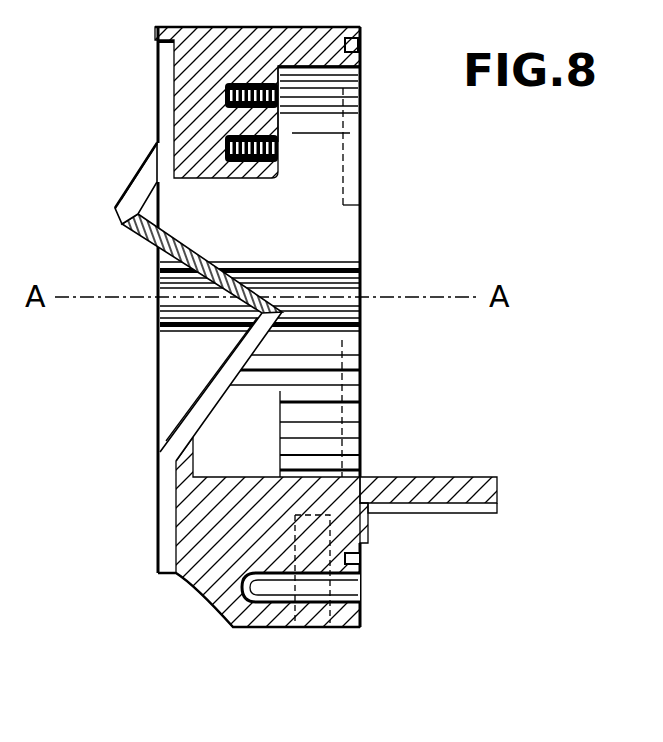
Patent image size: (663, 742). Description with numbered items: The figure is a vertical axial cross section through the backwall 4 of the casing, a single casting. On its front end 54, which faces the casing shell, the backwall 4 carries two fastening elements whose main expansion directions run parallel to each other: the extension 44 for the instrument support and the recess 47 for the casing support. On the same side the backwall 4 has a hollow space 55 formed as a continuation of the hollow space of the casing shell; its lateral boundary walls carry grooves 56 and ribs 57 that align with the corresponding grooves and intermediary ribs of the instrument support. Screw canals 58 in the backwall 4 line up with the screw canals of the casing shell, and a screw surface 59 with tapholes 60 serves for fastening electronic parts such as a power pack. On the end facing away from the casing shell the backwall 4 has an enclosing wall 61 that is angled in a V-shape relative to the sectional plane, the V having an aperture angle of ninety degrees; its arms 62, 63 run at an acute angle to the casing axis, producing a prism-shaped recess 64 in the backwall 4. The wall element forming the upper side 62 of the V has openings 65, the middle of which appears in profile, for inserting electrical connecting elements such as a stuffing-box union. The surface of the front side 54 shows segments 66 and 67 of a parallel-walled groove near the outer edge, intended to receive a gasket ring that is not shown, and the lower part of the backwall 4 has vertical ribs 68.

The backwall 4 is at (418, 627).
The extension 44 is at (440, 489).
The recess 47 is at (279, 604).
The front end 54 is at (361, 197).
The hollow space 55 is at (310, 232).
The grooves 56 is at (352, 408).
The ribs 57 is at (348, 361).
The screw canals 58 is at (160, 313).
The screw surface 59 is at (283, 117).
The tapholes 60 is at (245, 165).
The enclosing wall 61 is at (136, 182).
The upper arm of the V 62 is at (148, 232).
The lower arm of the V 63 is at (212, 386).
The prism-shaped recess 64 is at (183, 300).
The openings 65 is at (213, 262).
The groove segment 66 is at (362, 47).
The groove segment 67 is at (360, 555).
The vertical ribs 68 is at (160, 537).